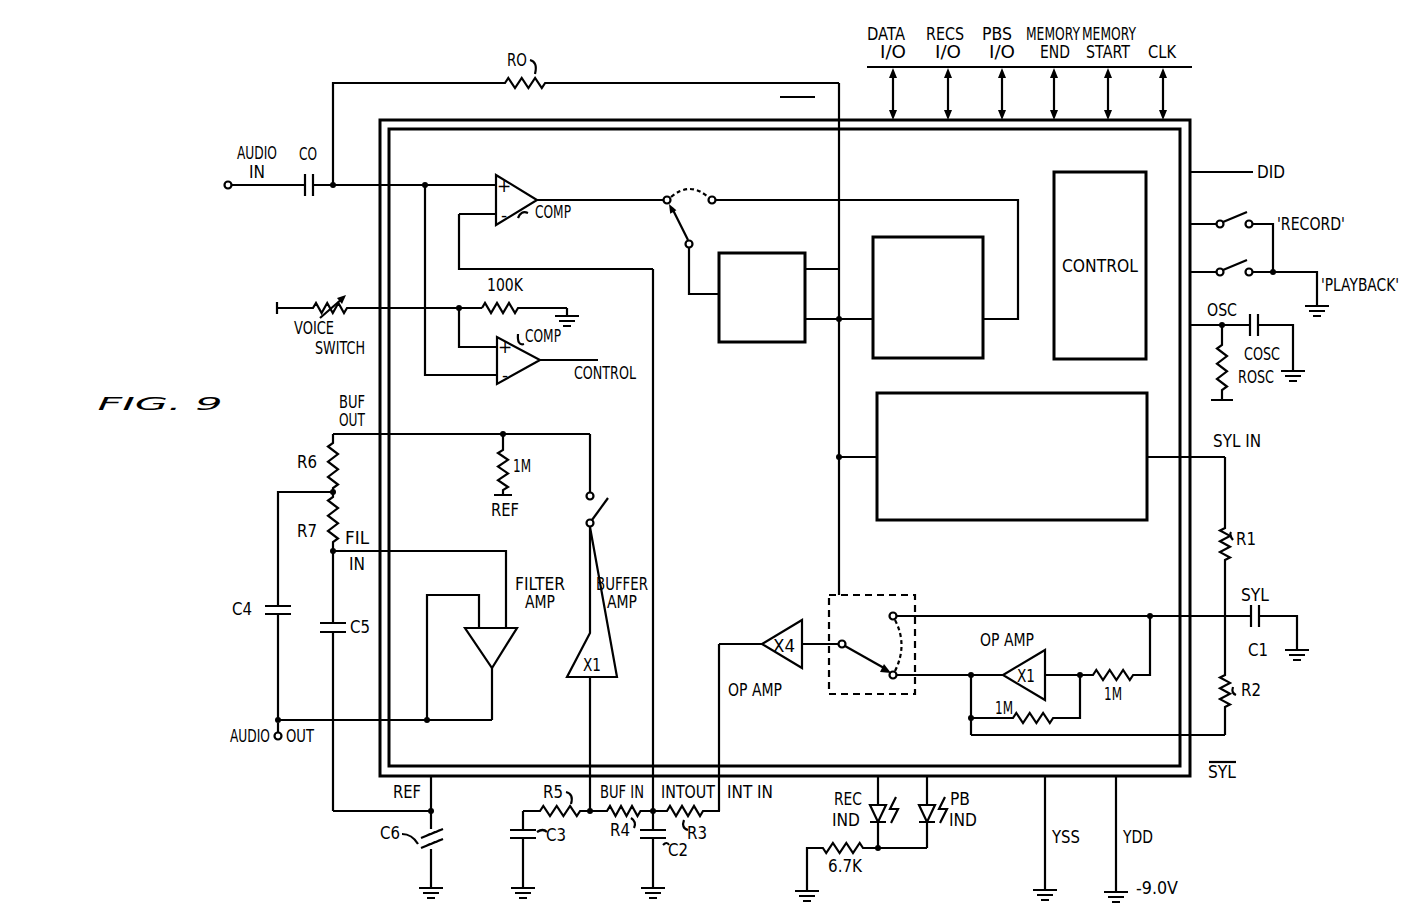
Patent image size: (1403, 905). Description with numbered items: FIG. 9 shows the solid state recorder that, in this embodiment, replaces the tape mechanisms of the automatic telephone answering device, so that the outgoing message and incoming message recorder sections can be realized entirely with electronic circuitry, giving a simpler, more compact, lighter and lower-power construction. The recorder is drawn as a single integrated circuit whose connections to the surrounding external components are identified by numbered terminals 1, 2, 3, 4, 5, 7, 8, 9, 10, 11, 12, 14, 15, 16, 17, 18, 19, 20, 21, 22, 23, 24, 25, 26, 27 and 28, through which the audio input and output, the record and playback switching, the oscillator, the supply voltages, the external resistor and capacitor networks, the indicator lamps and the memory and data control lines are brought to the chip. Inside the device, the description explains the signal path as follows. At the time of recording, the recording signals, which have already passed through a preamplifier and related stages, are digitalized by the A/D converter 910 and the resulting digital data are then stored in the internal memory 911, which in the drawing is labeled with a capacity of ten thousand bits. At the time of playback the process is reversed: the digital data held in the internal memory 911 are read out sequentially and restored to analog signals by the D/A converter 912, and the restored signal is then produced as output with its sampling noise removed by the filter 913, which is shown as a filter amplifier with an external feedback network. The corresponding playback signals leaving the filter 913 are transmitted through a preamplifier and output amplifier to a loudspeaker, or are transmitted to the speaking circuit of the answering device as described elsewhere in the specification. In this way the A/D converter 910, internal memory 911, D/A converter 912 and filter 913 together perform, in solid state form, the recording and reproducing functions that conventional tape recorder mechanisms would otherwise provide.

The record switch input pin 1 is at (1220, 241).
The playback switch input pin 2 is at (1246, 287).
The VDD supply pin 3 is at (1116, 820).
The oscillator pin 4 is at (1234, 356).
The clock pin 5 is at (1163, 116).
The data pin 7 is at (809, 176).
The audio input pin 8 is at (404, 169).
The voice switch input pin 9 is at (379, 297).
The syllable input pin 10 is at (1186, 472).
The syllable output pin 11 is at (1102, 624).
The op amp feedback pin 12 is at (1098, 721).
The integrator output pin 14 is at (665, 541).
The VSS supply pin 15 is at (1045, 819).
The reference pin 16 is at (428, 776).
The buffer input pin 17 is at (600, 745).
The buffer output pin 18 is at (461, 421).
The filter / integrator input pin 19 is at (511, 727).
The filter input pin 20 is at (419, 577).
The DID pin 21 is at (1204, 174).
The data I/O pin 22 is at (893, 116).
The record I/O pin 23 is at (948, 116).
The playback I/O pin 24 is at (1002, 116).
The memory end pin 25 is at (1056, 116).
The memory start pin 26 is at (1110, 116).
The record indicator pin 27 is at (883, 793).
The playback indicator pin 28 is at (933, 793).
The A/D converter 910 is at (762, 233).
The internal memory 911 is at (948, 228).
The D/A converter 912 is at (880, 543).
The filter 913 is at (467, 692).